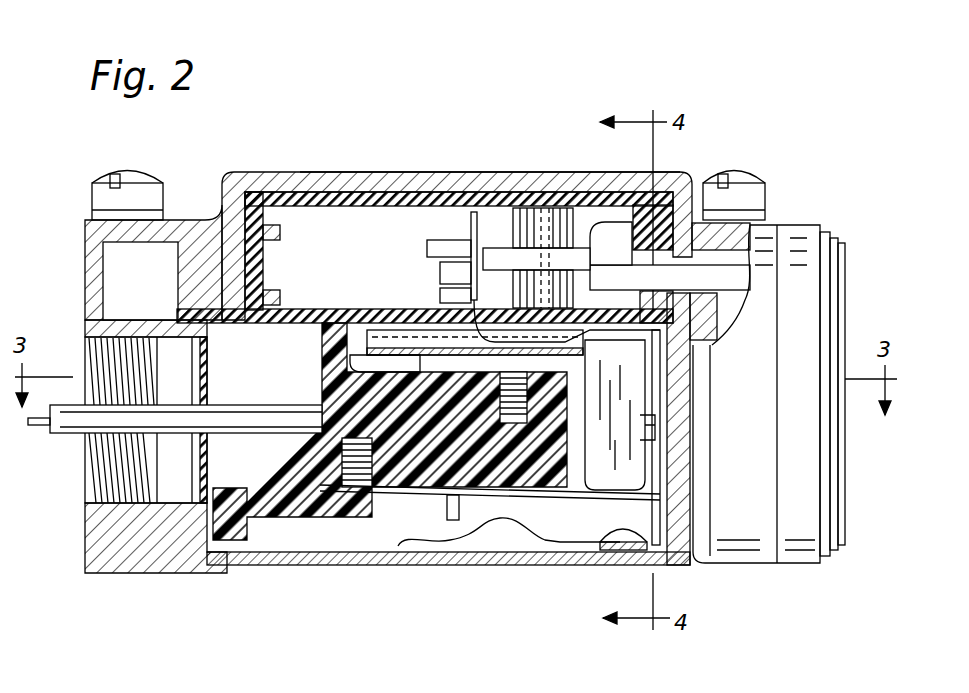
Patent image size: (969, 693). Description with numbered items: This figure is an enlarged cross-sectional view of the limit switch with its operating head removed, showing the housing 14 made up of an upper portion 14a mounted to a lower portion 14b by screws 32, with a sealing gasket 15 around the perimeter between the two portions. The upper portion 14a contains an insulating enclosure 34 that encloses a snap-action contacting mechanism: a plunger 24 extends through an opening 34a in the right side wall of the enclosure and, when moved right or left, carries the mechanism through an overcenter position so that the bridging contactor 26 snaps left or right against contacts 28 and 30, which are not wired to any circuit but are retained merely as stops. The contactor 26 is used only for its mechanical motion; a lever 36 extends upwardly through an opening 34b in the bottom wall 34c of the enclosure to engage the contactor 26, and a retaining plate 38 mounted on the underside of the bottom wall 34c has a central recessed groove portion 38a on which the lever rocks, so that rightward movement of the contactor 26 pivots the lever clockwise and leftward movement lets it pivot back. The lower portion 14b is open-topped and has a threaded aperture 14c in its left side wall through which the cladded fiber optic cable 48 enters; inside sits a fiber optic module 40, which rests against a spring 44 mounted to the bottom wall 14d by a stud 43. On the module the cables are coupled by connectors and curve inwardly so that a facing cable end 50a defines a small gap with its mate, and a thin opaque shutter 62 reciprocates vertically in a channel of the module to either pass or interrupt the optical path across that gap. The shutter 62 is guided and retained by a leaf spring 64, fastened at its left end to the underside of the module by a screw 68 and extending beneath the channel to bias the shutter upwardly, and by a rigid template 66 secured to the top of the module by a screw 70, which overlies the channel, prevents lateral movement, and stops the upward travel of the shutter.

The housing 14 is at (388, 170).
The upper portion 14a is at (463, 185).
The lower portion 14b is at (387, 560).
The threaded aperture 14c is at (93, 357).
The bottom wall 14d is at (270, 545).
The sealing gasket 15 is at (177, 327).
The plunger 24 is at (607, 230).
The bridging contactor 26 is at (471, 222).
The contact 28 is at (498, 235).
The contact 30 is at (460, 253).
The screws 32 is at (153, 186).
The insulating enclosure 34 is at (308, 197).
The opening 34a is at (682, 192).
The opening 34b is at (460, 302).
The bottom wall 34c is at (325, 310).
The lever 36 is at (453, 287).
The retaining plate 38 is at (385, 340).
The groove portion 38a is at (348, 365).
The fiber optic module 40 is at (340, 390).
The stud 43 is at (620, 533).
The spring 44 is at (452, 540).
The fiber optic cable 48 is at (52, 425).
The facing cable end 50a is at (648, 425).
The shutter 62 is at (647, 393).
The leaf spring 64 is at (433, 493).
The template 66 is at (677, 377).
The screw 68 is at (357, 487).
The screw 70 is at (462, 400).